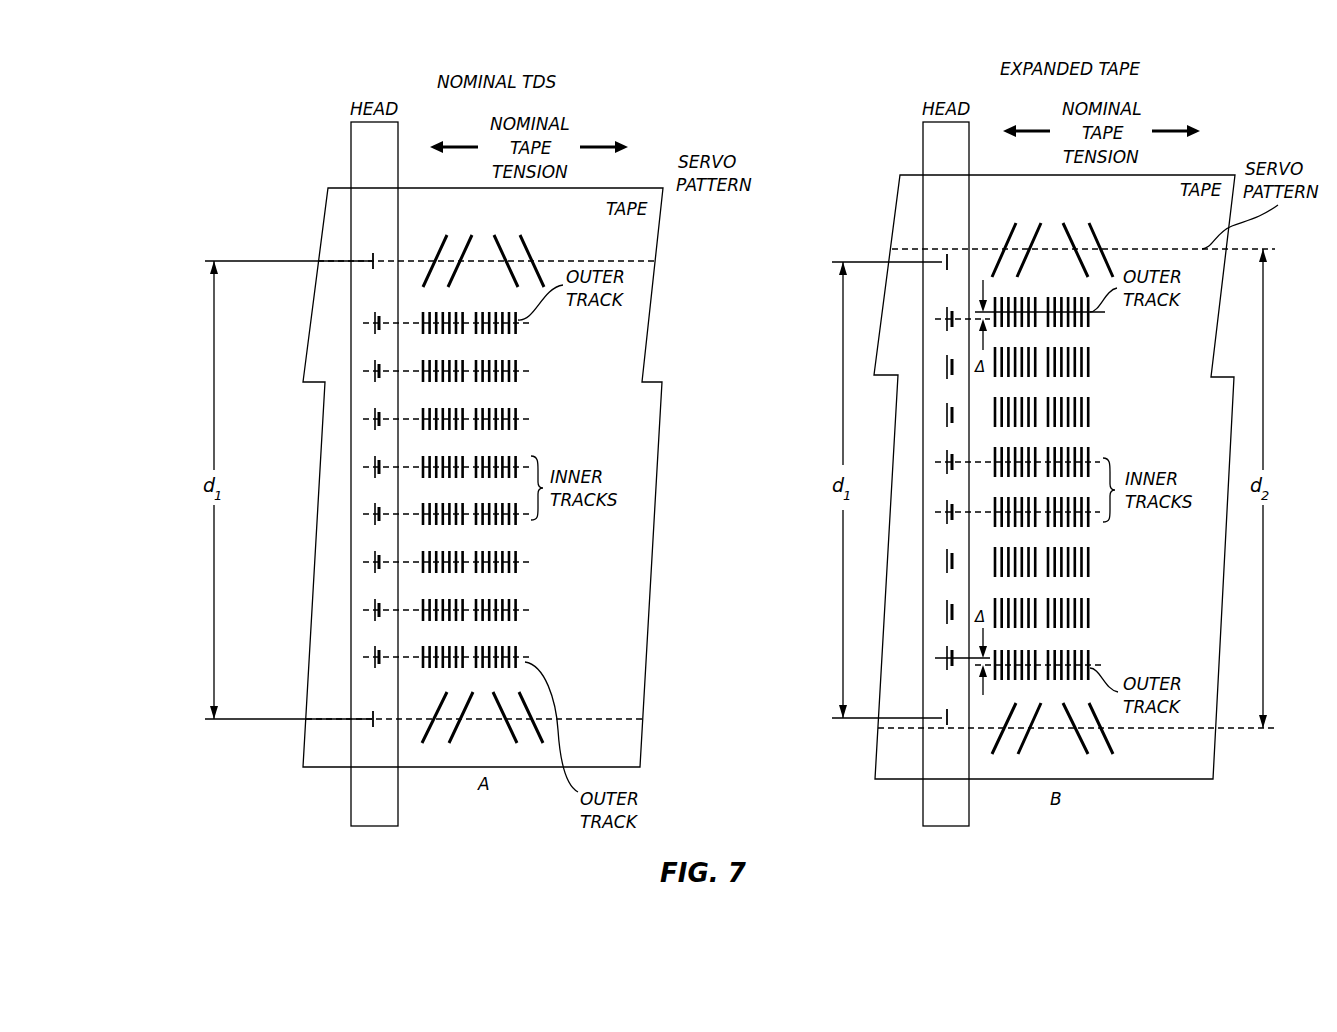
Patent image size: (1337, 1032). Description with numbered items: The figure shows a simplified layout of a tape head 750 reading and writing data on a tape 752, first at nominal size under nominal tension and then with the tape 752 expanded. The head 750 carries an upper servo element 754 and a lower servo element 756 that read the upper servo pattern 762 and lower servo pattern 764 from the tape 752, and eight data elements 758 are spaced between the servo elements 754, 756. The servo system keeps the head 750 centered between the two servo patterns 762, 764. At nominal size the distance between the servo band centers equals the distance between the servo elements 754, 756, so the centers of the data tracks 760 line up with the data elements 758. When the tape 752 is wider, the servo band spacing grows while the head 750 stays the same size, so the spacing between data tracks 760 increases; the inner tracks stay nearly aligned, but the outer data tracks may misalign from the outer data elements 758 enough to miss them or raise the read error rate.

In FIG. 7A, the head 750 is at (351, 150).
In FIG. 7B, the head 750 is at (923, 150).
In FIG. 7A, the tape 752 is at (525, 767).
In FIG. 7B, the tape 752 is at (1097, 779).
In FIG. 7A, the upper servo element 754 is at (373, 253).
In FIG. 7A, the lower servo element 756 is at (373, 727).
In FIG. 7A, the data elements 758 is at (366, 378).
In FIG. 7A, the data tracks 760 is at (518, 328).
In FIG. 7A, the upper servo pattern 762 is at (628, 261).
In FIG. 7A, the lower servo pattern 764 is at (627, 719).